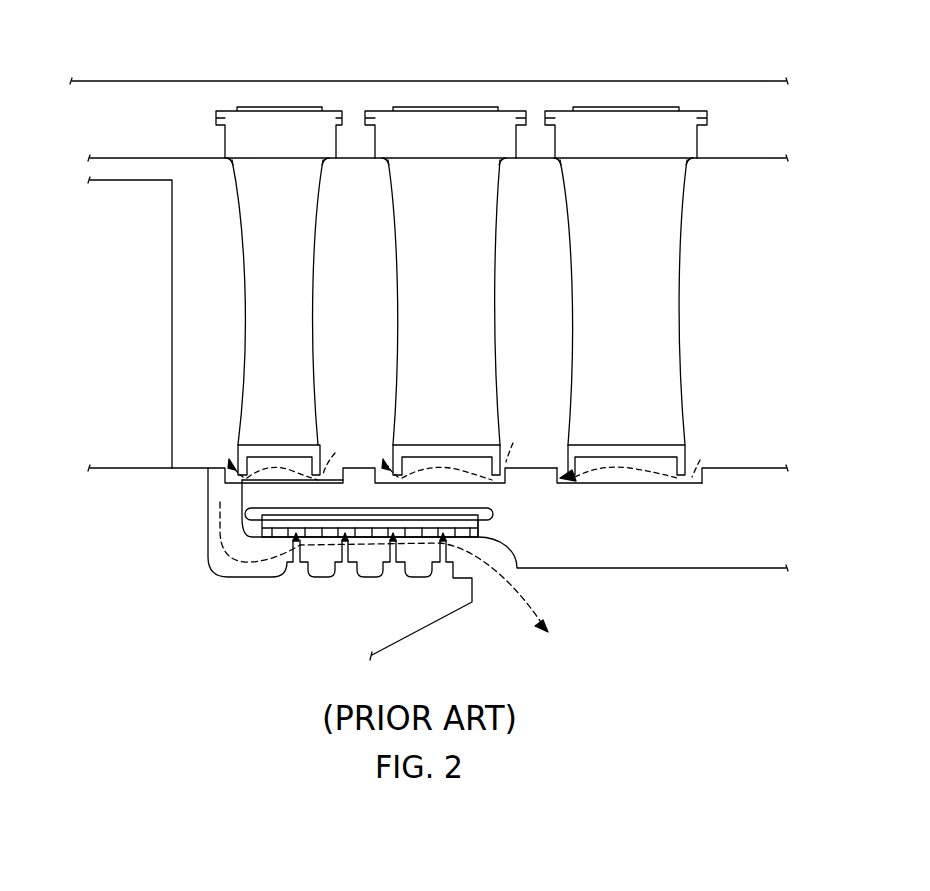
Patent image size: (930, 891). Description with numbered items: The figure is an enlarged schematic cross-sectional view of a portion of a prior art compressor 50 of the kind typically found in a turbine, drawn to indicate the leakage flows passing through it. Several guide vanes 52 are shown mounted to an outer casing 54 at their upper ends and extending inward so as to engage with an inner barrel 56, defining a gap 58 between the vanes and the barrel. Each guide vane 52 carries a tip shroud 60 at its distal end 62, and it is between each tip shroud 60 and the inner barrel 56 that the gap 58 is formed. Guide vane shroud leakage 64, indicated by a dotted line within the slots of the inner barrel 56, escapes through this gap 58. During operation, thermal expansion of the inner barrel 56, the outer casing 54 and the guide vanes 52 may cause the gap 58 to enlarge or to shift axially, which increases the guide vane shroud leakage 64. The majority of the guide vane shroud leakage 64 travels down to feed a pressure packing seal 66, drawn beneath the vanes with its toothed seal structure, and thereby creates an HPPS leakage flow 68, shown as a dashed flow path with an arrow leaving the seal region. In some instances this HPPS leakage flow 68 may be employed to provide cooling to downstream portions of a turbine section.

The compressor 50 is at (138, 59).
The guide vane 52 is at (497, 283).
The outer casing 54 is at (669, 80).
The inner barrel 56 is at (725, 571).
The gap 58 is at (565, 474).
The tip shroud 60 is at (322, 443).
The distal end 62 is at (252, 445).
The guide vane shroud leakage 64 is at (632, 484).
The pressure packing seal (HPPS) 66 is at (480, 530).
The HPPS leakage flow 68 is at (507, 597).